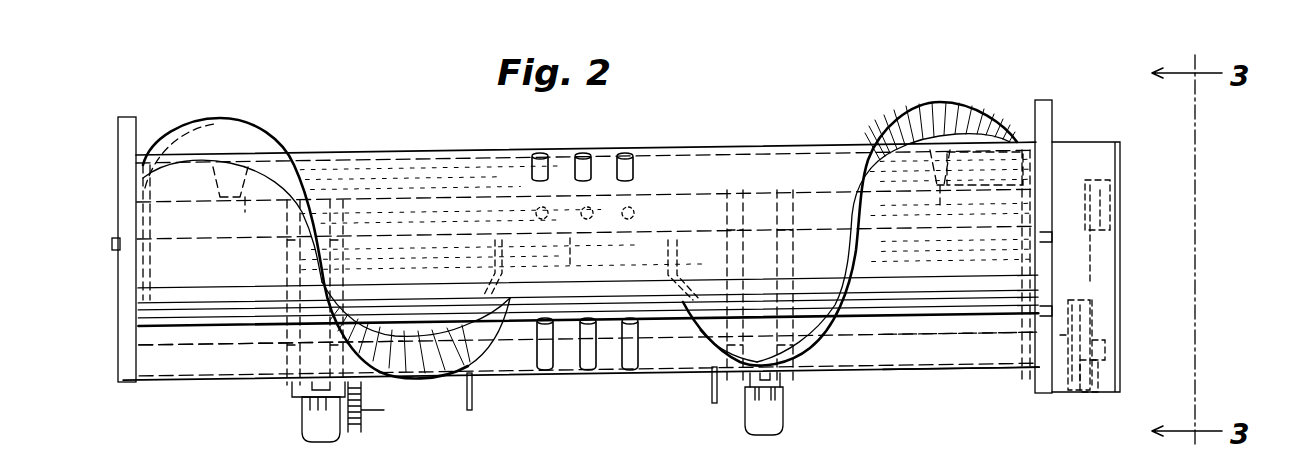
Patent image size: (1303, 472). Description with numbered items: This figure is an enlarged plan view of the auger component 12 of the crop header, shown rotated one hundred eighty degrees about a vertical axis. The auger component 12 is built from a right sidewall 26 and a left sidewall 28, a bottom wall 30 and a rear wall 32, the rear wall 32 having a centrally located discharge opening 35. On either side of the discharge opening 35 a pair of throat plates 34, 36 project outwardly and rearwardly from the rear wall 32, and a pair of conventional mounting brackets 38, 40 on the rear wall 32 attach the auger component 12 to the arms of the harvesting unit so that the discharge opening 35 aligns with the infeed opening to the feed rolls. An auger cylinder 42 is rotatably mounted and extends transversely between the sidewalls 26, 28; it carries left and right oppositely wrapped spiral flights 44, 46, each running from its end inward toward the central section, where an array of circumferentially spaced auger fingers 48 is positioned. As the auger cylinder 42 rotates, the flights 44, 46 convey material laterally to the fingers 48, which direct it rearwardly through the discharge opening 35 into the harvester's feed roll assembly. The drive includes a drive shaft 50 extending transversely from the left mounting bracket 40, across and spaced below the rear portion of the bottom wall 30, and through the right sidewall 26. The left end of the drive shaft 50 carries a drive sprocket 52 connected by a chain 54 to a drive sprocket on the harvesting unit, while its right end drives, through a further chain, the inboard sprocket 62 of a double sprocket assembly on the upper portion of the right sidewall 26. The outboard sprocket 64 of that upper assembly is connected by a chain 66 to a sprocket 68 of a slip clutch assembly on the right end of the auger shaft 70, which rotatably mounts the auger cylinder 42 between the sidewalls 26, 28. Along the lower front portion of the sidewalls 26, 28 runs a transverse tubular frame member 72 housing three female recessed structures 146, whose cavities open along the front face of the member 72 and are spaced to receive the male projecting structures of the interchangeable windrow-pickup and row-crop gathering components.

The auger component 12 is at (751, 76).
The right sidewall 26 is at (1052, 117).
The left sidewall 28 is at (118, 200).
The bottom wall 30 is at (206, 341).
The rear wall 32 is at (925, 370).
The throat plate 34 is at (712, 398).
The discharge opening 35 is at (613, 399).
The throat plate 36 is at (472, 400).
The mounting bracket 38 is at (783, 400).
The mounting bracket 40 is at (302, 425).
The auger cylinder 42 is at (579, 261).
The left spiral flight 44 is at (925, 105).
The right spiral flight 46 is at (237, 117).
The auger fingers 48 is at (613, 165).
The drive shaft 50 is at (938, 347).
The drive sprocket 52 is at (363, 370).
The chain 54 is at (366, 422).
The inboard sprocket 62 is at (1088, 390).
The outboard sprocket 64 is at (1095, 375).
The chain 66 is at (1093, 310).
The sprocket 68 is at (1094, 186).
The auger shaft 70 is at (112, 244).
The transverse tubular frame member 72 is at (478, 170).
The female recessed structures 146 is at (937, 192).